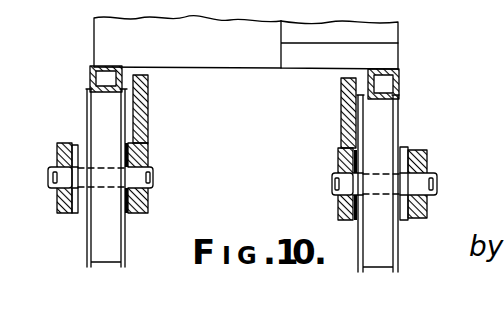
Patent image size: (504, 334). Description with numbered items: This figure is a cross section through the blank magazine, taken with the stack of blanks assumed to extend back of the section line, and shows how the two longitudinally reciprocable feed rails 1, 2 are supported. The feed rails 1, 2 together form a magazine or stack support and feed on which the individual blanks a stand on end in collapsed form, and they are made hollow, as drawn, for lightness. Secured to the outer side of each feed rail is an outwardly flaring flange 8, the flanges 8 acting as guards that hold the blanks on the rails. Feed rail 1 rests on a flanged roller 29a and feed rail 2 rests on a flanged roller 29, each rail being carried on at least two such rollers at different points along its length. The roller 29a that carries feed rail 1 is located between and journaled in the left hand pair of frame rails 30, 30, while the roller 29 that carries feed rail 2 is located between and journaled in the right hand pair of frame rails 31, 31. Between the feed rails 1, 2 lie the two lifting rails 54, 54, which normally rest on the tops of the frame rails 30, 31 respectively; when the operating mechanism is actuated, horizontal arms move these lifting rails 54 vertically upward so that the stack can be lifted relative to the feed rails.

The feed rail 1 is at (107, 65).
The feed rail 2 is at (386, 70).
The blank a is at (248, 60).
The outwardly flaring flange 8 is at (90, 66).
The flanged roller 29 is at (385, 120).
The flanged roller 29a is at (102, 117).
The frame rail 30 is at (62, 155).
The frame rail 31 is at (341, 158).
The lifting rail 54 is at (149, 100).